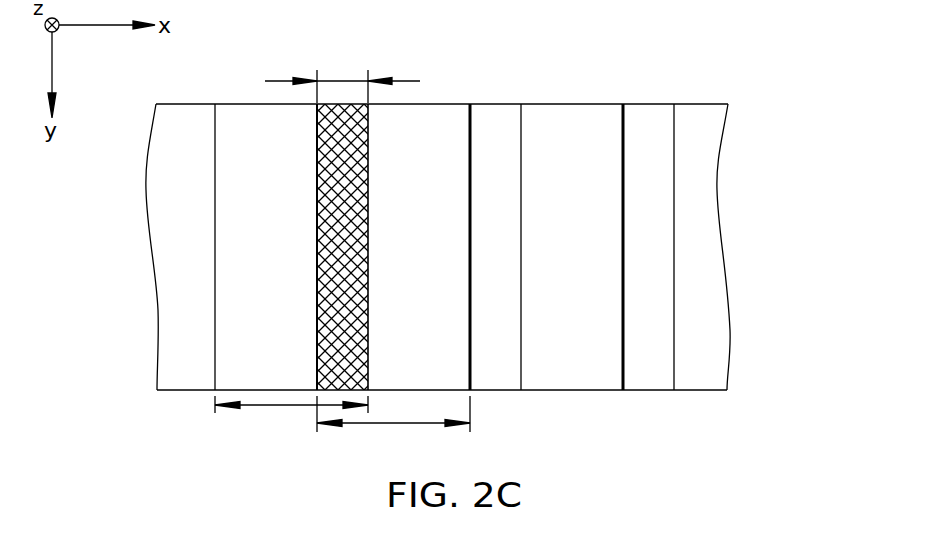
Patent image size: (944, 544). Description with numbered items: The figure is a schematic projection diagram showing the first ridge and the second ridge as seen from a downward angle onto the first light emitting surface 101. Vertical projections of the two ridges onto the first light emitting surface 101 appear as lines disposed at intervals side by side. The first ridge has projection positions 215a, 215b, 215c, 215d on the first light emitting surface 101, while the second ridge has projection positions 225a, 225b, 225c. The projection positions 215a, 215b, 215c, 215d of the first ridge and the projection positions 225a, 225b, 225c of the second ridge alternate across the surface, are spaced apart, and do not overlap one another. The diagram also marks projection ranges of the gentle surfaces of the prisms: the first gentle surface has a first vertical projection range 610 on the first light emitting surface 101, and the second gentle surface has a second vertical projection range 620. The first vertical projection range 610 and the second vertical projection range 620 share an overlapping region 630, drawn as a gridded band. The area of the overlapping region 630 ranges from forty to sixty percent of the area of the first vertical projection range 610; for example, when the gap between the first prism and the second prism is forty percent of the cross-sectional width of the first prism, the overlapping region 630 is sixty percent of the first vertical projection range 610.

The first light emitting surface 101 is at (177, 312).
The projection position of the first ridge 215a is at (215, 137).
The projection position of the first ridge 215b is at (368, 155).
The projection position of the first ridge 215c is at (522, 137).
The projection position of the first ridge 215d is at (674, 137).
The projection position of the second ridge 225a is at (317, 157).
The projection position of the second ridge 225b is at (470, 137).
The projection position of the second ridge 225c is at (623, 137).
The first vertical projection range 610 is at (291, 416).
The second vertical projection range 620 is at (393, 425).
The overlapping region 630 is at (342, 75).